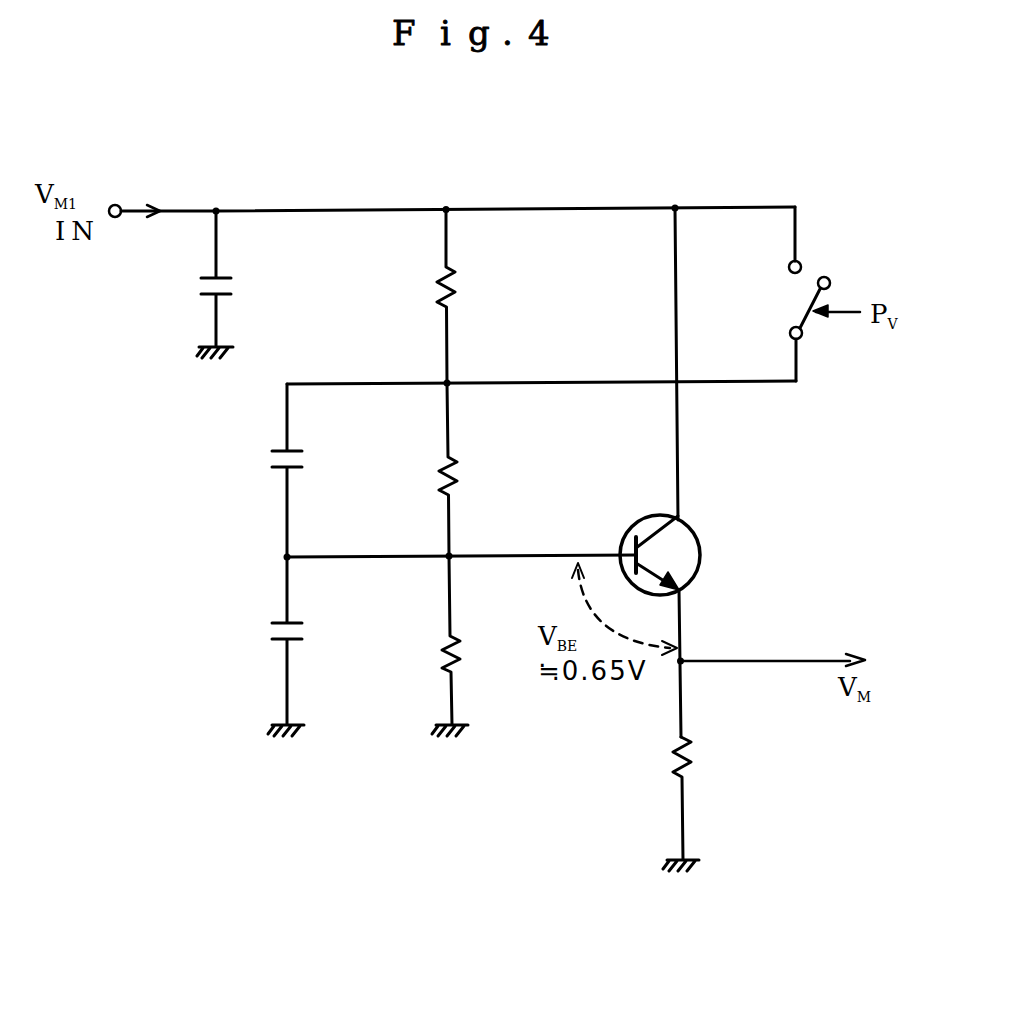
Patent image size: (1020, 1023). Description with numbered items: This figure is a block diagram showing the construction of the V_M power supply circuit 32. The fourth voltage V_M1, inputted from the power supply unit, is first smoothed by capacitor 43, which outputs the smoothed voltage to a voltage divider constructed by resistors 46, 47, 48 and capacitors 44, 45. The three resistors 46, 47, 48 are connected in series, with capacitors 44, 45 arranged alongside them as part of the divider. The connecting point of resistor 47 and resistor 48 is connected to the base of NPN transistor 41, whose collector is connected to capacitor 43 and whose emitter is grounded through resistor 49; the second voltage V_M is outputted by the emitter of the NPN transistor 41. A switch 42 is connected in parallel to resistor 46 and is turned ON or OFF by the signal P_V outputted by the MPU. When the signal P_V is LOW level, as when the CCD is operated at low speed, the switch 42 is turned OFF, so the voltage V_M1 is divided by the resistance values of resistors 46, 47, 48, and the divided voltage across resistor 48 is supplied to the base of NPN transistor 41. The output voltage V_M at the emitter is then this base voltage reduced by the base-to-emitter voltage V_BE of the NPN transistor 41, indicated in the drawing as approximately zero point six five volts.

The V_M power supply circuit 32 is at (241, 720).
The NPN transistor 41 is at (697, 528).
The switch 42 is at (800, 308).
The capacitor 43 is at (195, 288).
The capacitor 44 is at (268, 463).
The capacitor 45 is at (268, 634).
The resistor 46 is at (460, 284).
The resistor 47 is at (460, 474).
The resistor 48 is at (462, 645).
The resistor 49 is at (702, 752).